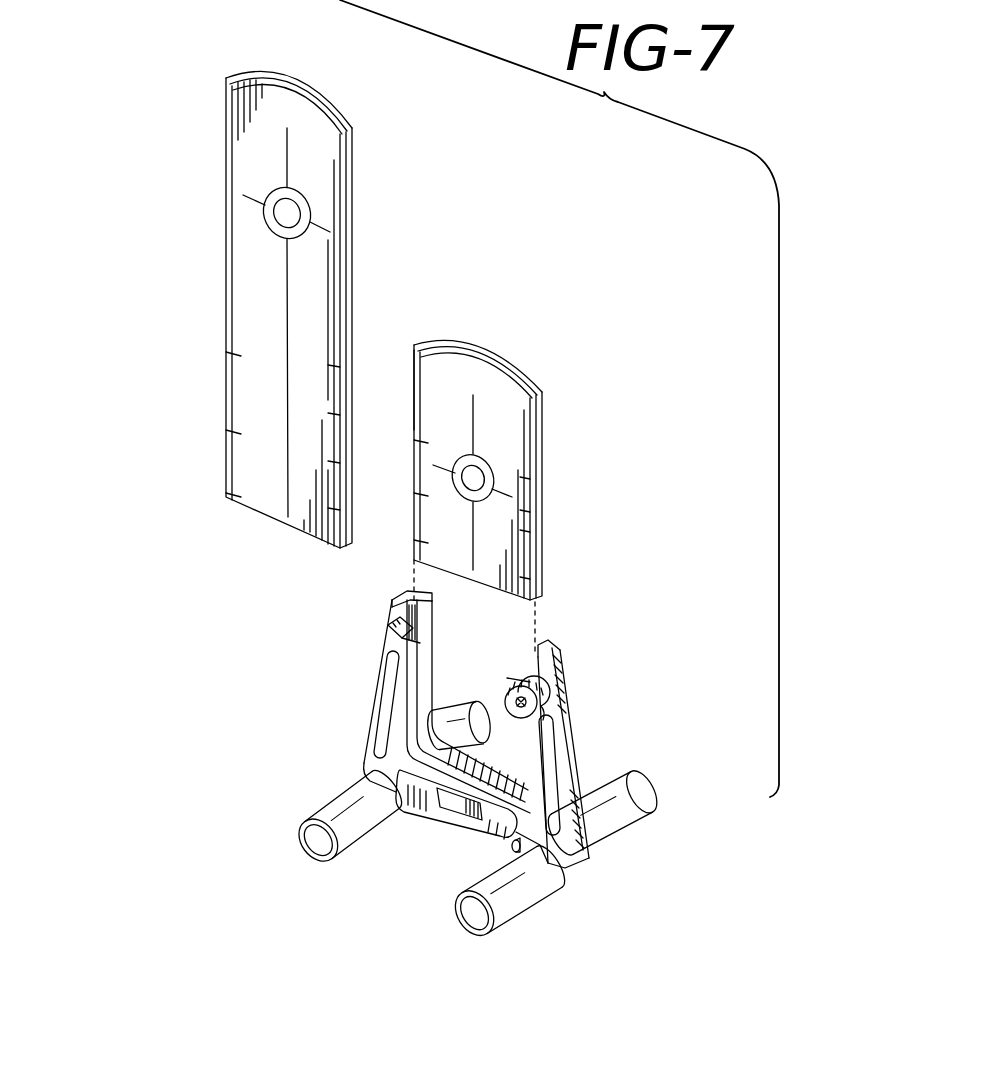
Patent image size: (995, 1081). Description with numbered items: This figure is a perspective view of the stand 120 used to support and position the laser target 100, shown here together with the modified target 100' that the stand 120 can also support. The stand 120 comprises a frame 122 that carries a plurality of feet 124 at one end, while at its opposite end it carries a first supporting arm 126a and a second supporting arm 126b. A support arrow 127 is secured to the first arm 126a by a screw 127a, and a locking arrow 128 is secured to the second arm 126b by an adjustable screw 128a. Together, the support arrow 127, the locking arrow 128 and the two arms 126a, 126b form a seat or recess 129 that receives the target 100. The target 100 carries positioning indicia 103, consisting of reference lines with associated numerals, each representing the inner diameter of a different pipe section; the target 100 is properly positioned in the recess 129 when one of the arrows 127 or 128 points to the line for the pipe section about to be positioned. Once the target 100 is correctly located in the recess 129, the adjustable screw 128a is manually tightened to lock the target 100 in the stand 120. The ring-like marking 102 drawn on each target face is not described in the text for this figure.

The modified target 100' is at (205, 309).
The target 100 is at (478, 436).
The aiming ring 102 is at (472, 437).
The positioning indicia 103 is at (418, 433).
The stand 120 is at (348, 706).
The frame 122 is at (512, 849).
The feet 124 is at (460, 712).
The first supporting arm 126a is at (393, 656).
The second supporting arm 126b is at (568, 738).
The support arrow 127 is at (420, 643).
The screw 127a is at (390, 624).
The locking arrow 128 is at (508, 683).
The adjustable screw 128a is at (545, 713).
The recess 129 is at (503, 773).